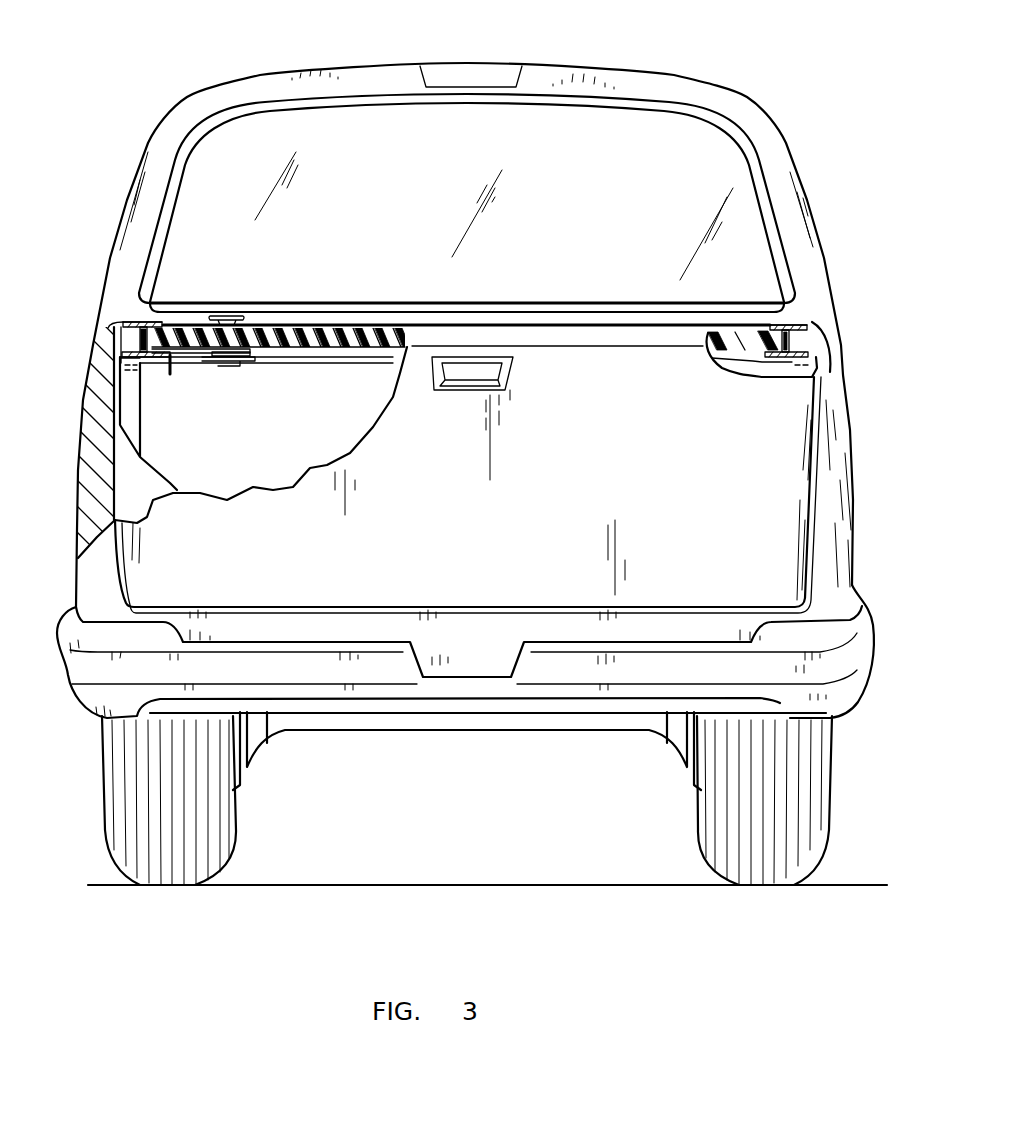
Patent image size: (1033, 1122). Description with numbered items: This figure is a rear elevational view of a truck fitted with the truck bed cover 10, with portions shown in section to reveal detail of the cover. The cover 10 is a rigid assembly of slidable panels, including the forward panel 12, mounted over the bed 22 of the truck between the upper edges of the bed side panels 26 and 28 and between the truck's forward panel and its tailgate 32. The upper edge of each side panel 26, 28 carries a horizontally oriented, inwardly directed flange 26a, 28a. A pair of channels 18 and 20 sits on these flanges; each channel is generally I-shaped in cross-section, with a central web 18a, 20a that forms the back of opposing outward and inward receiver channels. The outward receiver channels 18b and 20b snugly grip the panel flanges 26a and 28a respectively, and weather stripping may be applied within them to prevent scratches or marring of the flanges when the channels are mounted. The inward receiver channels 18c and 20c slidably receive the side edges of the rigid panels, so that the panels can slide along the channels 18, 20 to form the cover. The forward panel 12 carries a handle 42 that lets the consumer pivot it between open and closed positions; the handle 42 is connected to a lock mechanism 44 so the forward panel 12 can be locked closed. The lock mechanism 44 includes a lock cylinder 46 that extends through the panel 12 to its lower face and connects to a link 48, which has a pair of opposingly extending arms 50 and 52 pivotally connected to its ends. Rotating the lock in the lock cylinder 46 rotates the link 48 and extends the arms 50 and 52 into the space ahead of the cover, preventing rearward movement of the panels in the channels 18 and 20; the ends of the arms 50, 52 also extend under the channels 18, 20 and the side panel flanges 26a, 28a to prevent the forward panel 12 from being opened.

The truck bed cover 10 is at (665, 170).
The forward panel 12 is at (373, 338).
The channel 18 is at (790, 324).
The central web 18a is at (810, 324).
The outward receiver channel 18b is at (820, 343).
The inward receiver channel 18c is at (758, 338).
The channel 20 is at (141, 322).
The central web 20a is at (150, 322).
The outward receiver channel 20b is at (126, 340).
The inward receiver channel 20c is at (178, 356).
The bed 22 is at (168, 420).
The bed side panel 26 is at (853, 463).
The flange 26a is at (816, 332).
The bed side panel 28 is at (78, 503).
The flange 28a is at (123, 322).
The tailgate 32 is at (625, 483).
The handle 42 is at (228, 317).
The lock mechanism 44 is at (262, 322).
The lock cylinder 46 is at (172, 340).
The link 48 is at (238, 358).
The arm 50 is at (198, 461).
The arm 52 is at (352, 368).